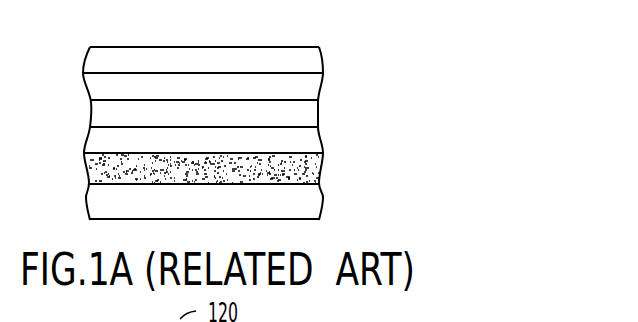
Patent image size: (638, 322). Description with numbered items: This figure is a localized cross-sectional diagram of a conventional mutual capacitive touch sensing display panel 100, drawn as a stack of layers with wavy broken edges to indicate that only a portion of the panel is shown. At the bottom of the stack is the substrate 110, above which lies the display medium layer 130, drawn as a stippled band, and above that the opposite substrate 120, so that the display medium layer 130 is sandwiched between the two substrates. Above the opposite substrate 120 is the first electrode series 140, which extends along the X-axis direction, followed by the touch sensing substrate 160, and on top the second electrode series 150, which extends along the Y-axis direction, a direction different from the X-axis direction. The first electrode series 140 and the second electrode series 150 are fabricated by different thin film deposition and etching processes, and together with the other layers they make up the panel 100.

The mutual capacitive touch sensing display panel 100 is at (497, 241).
The substrate 110 is at (296, 199).
The opposite substrate 120 is at (298, 140).
The display medium layer 130 is at (320, 168).
The first electrode series 140 is at (298, 114).
The second electrode series 150 is at (302, 63).
The touch sensing substrate 160 is at (302, 89).